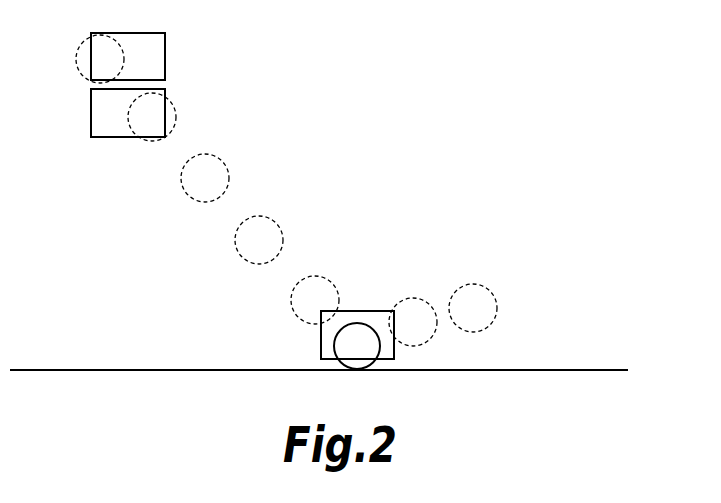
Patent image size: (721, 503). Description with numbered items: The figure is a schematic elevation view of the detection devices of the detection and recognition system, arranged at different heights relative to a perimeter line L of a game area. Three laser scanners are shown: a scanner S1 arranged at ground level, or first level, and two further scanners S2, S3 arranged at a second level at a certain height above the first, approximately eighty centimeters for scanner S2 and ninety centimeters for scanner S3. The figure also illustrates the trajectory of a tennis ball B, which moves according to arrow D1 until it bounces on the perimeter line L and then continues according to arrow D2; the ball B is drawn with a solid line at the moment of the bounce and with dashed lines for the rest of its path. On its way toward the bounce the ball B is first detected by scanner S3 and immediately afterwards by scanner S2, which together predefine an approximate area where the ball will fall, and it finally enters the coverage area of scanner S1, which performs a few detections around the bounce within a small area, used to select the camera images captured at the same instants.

The laser scanner S1 is at (364, 315).
The laser scanner S2 is at (106, 115).
The laser scanner S3 is at (146, 58).
The arrow D1 is at (200, 250).
The arrow D2 is at (570, 275).
The tennis ball B is at (345, 343).
The perimeter line L is at (342, 369).